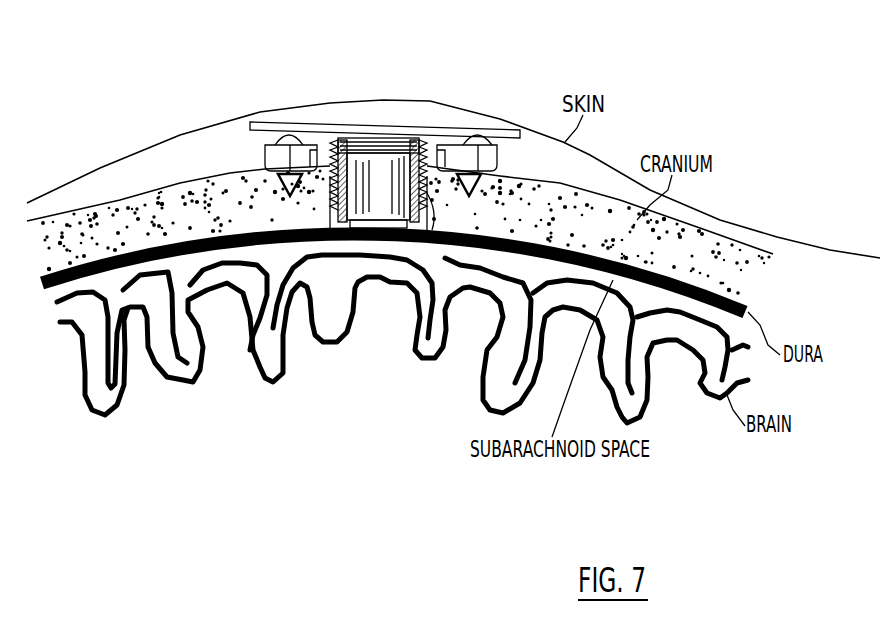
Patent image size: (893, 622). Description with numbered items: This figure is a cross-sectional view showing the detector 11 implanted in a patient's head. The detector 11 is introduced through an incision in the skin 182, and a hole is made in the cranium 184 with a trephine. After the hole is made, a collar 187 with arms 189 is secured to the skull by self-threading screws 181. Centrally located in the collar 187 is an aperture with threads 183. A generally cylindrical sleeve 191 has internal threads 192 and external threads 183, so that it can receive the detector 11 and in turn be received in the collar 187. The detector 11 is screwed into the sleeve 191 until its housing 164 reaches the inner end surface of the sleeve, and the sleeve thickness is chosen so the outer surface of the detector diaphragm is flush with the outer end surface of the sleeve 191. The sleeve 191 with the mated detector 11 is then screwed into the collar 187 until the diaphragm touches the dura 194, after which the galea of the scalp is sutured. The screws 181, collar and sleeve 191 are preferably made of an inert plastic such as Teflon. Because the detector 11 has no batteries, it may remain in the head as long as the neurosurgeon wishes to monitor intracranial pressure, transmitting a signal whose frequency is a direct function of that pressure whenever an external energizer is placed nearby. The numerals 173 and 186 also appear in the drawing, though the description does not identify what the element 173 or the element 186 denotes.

The detector 11 is at (380, 127).
The housing 164 is at (378, 143).
The mounting plate 173 is at (396, 98).
The self-threading screws 181 is at (380, 142).
The skin 182 is at (453, 175).
The threads 183 is at (314, 145).
The cranium 184 is at (393, 311).
The bone hole 186 is at (430, 243).
The collar 187 is at (256, 157).
The arms 189 is at (462, 160).
The sleeve 191 is at (313, 308).
The internal threads 192 is at (397, 105).
The dura 194 is at (488, 321).